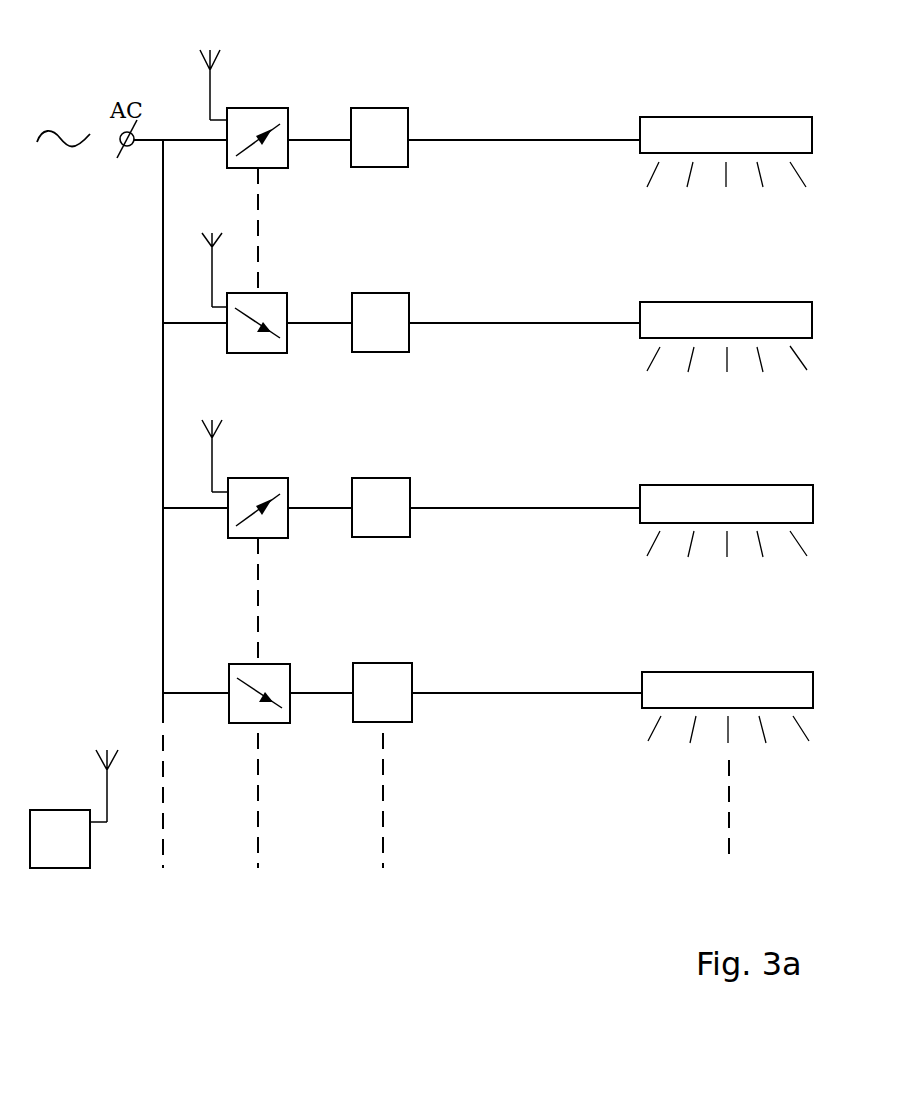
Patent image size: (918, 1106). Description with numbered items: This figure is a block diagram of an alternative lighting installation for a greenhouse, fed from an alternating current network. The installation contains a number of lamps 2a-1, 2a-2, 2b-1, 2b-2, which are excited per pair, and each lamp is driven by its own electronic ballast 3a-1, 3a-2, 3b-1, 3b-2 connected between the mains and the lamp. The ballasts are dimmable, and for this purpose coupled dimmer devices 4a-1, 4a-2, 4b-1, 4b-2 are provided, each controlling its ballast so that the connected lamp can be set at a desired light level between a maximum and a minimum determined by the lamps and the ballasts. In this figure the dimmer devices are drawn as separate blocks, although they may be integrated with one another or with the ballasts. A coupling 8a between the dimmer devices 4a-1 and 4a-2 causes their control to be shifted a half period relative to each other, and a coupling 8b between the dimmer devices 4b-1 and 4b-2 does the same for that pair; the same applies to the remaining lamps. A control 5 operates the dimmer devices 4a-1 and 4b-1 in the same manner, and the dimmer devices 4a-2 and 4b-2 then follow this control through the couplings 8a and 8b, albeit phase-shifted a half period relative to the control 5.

The lamp 2a-1 is at (668, 117).
The lamp 2a-2 is at (669, 302).
The lamp 2b-1 is at (669, 485).
The lamp 2b-2 is at (670, 672).
The electronic ballast 3a-1 is at (391, 108).
The electronic ballast 3a-2 is at (392, 293).
The electronic ballast 3b-1 is at (393, 478).
The electronic ballast 3b-2 is at (395, 663).
The dimmer device 4a-1 is at (271, 108).
The dimmer device 4a-2 is at (283, 293).
The dimmer device 4b-1 is at (283, 478).
The dimmer device 4b-2 is at (273, 664).
The coupling 8a is at (258, 203).
The coupling 8b is at (258, 573).
The control 5 is at (46, 810).